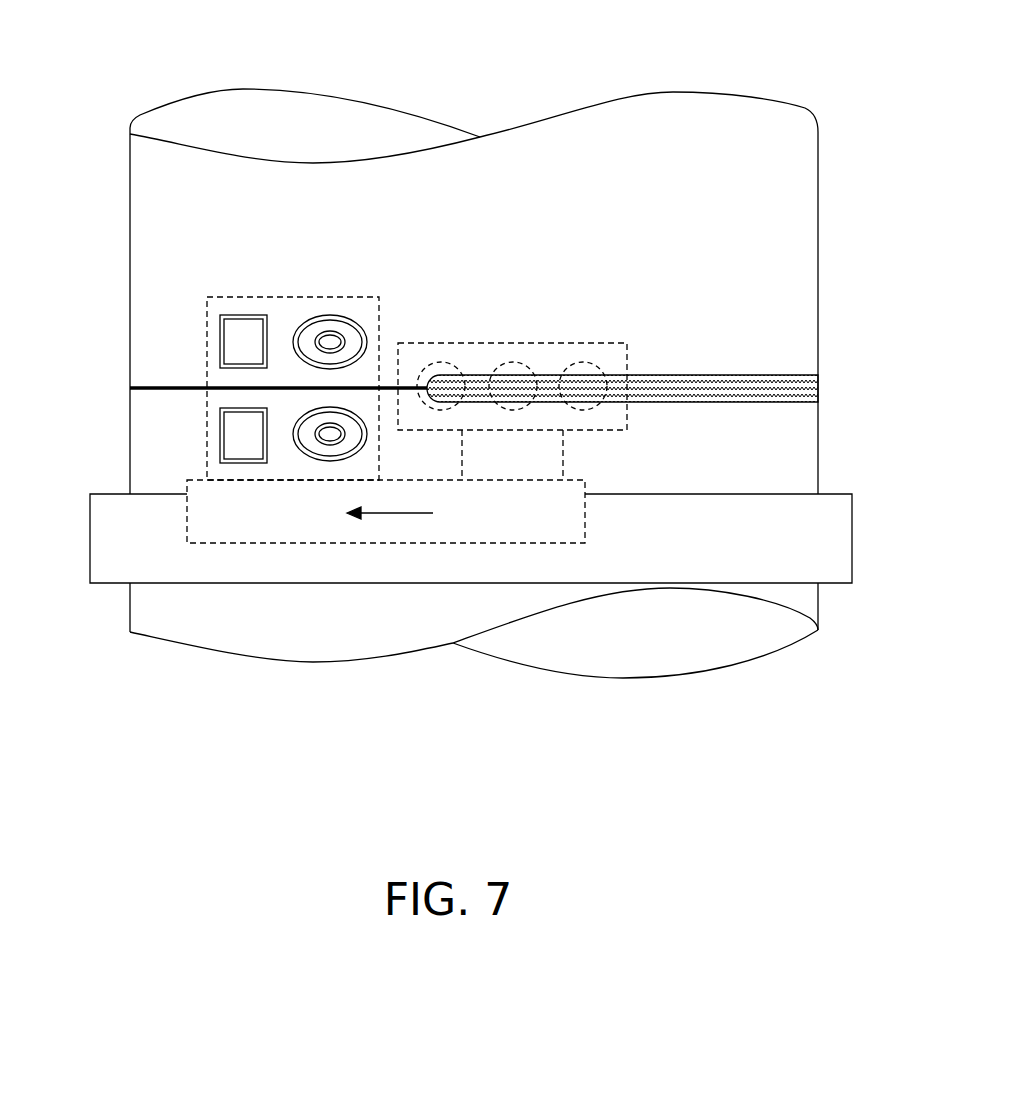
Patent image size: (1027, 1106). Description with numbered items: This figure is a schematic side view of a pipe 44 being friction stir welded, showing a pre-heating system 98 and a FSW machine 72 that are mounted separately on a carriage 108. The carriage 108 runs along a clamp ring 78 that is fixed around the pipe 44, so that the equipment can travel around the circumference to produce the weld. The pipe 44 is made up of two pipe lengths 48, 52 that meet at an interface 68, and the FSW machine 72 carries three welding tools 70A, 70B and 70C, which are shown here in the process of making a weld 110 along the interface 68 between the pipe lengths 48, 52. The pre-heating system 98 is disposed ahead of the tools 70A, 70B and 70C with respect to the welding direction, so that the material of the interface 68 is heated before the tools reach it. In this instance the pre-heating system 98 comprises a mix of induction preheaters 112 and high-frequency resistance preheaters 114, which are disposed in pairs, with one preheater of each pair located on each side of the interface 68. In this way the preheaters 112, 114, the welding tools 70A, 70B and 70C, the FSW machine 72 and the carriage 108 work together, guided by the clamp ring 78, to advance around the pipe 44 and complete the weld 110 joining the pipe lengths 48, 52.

The pipe 44 is at (157, 73).
The pipe length 48 is at (728, 123).
The pipe length 52 is at (147, 603).
The interface 68 is at (162, 385).
The welding tool 70A is at (443, 363).
The welding tool 70B is at (517, 363).
The welding tool 70C is at (590, 363).
The FSW machine 72 is at (618, 358).
The clamp ring 78 is at (827, 510).
The pre-heating system 98 is at (272, 303).
The carriage 108 is at (577, 493).
The weld 110 is at (735, 388).
The induction preheater 112 is at (243, 332).
The high-frequency resistance preheater 114 is at (335, 328).